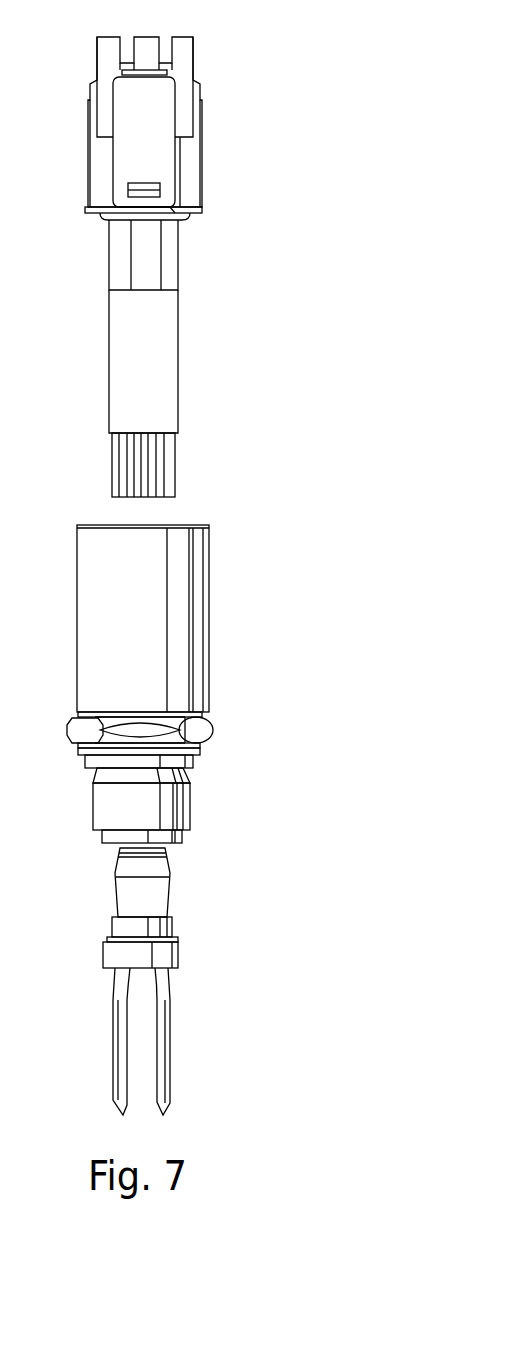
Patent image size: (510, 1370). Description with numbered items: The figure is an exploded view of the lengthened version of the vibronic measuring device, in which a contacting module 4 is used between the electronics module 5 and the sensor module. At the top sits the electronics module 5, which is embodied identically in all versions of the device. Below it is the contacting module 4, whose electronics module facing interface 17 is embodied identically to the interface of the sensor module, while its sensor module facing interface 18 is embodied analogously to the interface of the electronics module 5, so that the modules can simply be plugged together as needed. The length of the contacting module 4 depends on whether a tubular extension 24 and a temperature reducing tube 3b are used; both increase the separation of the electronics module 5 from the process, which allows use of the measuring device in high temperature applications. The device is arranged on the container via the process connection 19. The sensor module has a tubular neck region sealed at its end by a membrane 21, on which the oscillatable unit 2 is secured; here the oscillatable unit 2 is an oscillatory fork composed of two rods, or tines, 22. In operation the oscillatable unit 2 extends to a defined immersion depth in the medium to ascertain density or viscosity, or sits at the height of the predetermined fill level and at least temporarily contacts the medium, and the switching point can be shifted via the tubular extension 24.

The electronics module 5 is at (216, 108).
The electronics module facing interface 17 is at (102, 253).
The contacting module 4 is at (150, 375).
The sensor module facing interface 18 is at (160, 497).
The temperature reducing tube 3b is at (178, 630).
The process connection 19 is at (193, 728).
The tubular extension 24 is at (150, 903).
The membrane 21 is at (108, 972).
The rods 22 is at (163, 1018).
The oscillatable unit 2 is at (145, 981).